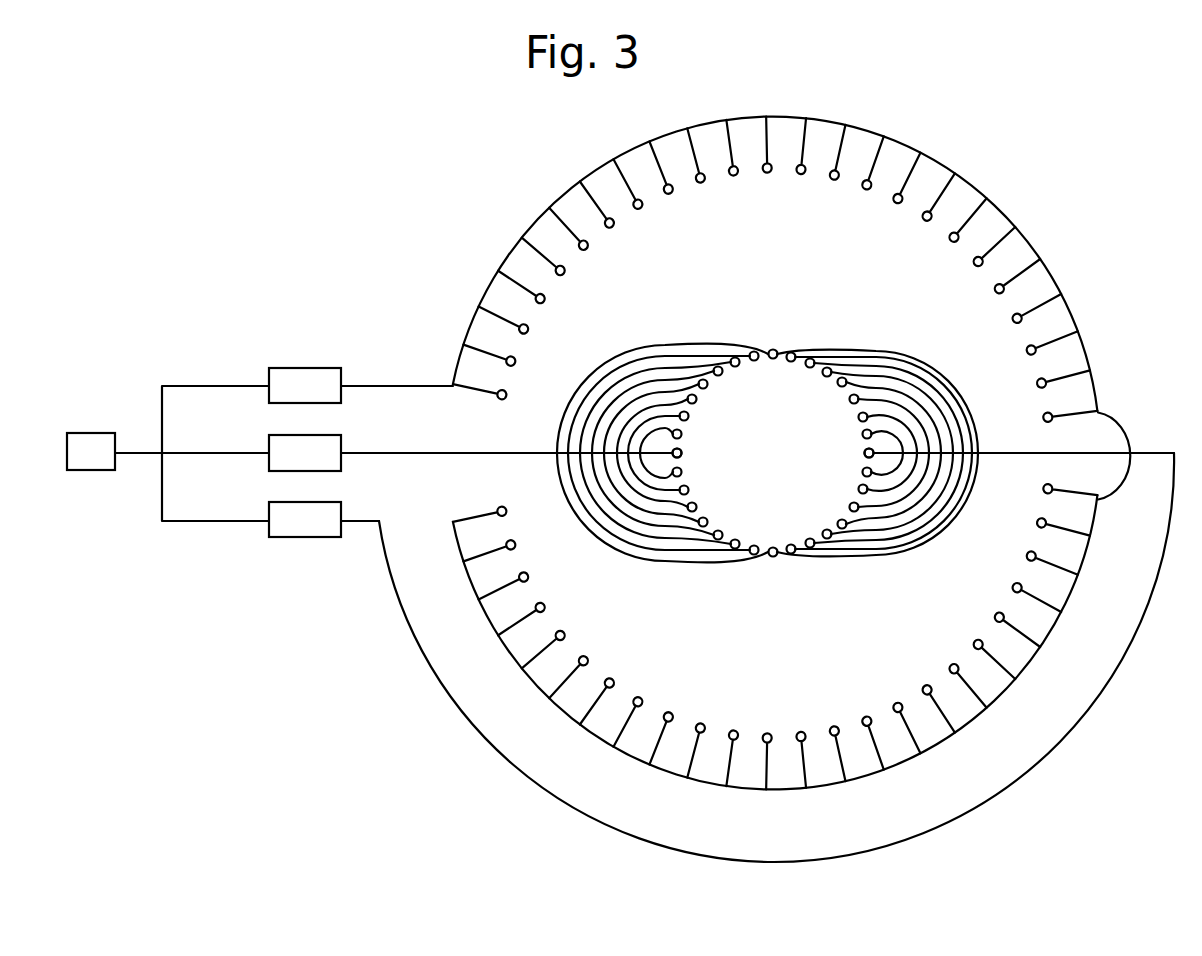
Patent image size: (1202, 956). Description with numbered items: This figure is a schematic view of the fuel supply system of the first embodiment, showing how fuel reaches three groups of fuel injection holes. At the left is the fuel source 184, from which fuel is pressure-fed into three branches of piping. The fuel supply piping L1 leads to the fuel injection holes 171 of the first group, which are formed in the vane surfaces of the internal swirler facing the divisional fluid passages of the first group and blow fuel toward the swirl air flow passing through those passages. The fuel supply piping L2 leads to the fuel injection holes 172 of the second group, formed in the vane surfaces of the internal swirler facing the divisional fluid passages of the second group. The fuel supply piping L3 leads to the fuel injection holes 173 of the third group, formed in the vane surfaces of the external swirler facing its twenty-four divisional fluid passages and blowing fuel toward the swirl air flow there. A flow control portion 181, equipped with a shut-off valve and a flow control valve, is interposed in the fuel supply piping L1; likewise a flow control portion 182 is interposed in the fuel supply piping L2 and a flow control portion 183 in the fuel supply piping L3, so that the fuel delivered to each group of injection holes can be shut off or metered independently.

The fuel injection holes of a first group 171 is at (808, 372).
The fuel injection holes of a second group 172 is at (758, 373).
The fuel injection holes of a third group 173 is at (565, 268).
The flow control portion 181 is at (290, 539).
The flow control portion 182 is at (270, 434).
The flow control portion 183 is at (310, 367).
The fuel source 184 is at (93, 472).
The fuel supply piping L1 is at (401, 607).
The fuel supply piping L2 is at (412, 457).
The fuel supply piping L3 is at (399, 384).